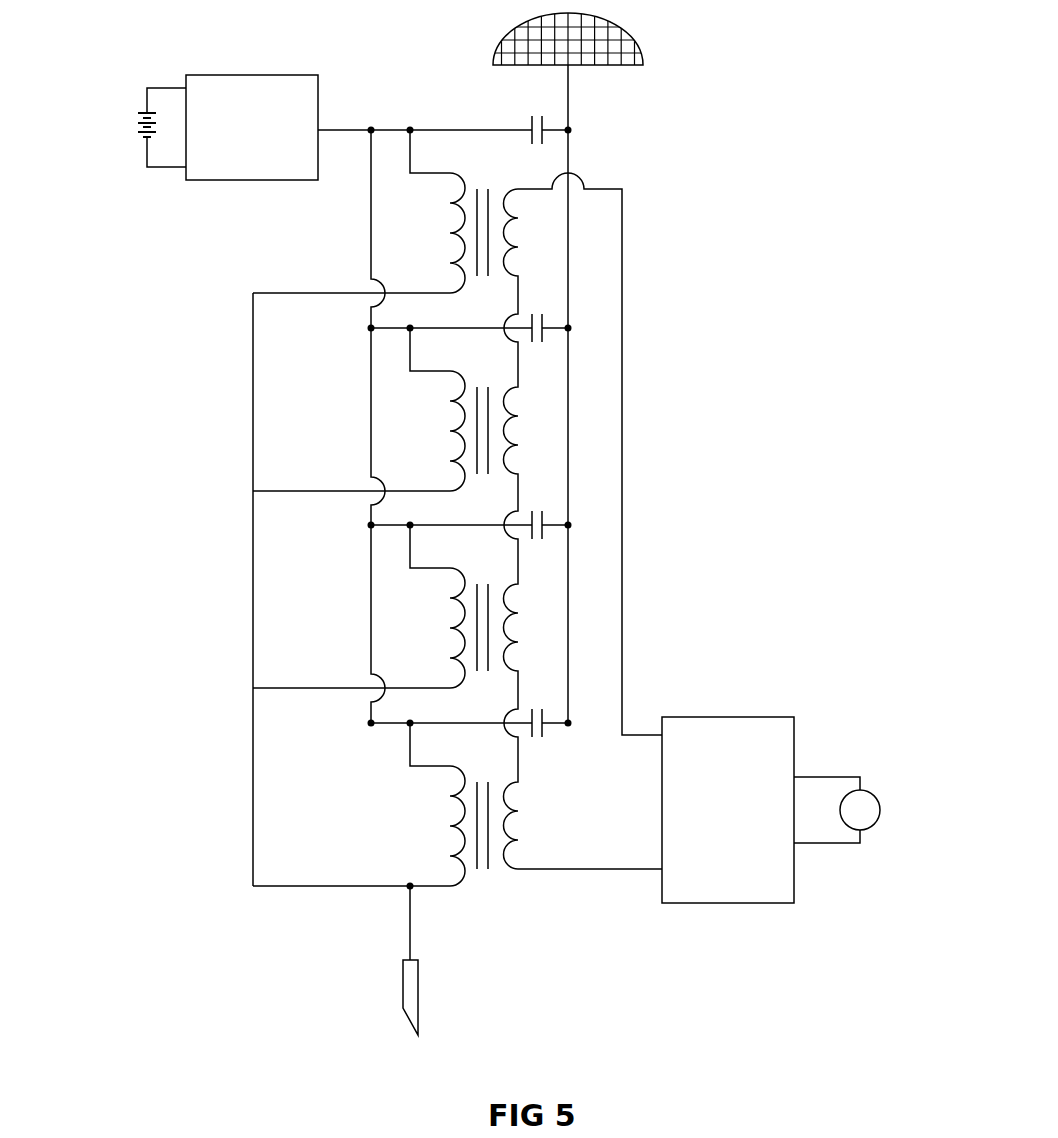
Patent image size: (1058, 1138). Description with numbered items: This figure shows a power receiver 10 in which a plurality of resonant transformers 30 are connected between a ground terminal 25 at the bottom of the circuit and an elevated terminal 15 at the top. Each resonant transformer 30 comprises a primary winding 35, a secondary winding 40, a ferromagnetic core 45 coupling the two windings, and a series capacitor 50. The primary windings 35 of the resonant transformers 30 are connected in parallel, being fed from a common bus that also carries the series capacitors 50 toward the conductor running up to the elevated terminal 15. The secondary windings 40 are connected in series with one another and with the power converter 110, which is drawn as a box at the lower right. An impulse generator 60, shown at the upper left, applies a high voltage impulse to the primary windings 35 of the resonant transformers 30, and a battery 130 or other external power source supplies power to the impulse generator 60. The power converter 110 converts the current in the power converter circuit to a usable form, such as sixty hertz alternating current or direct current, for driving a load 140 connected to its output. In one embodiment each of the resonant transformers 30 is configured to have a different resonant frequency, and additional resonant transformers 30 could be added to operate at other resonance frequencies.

The power receiver 10 is at (734, 45).
The elevated terminal 15 is at (616, 28).
The ground terminal 25 is at (418, 990).
The resonant transformer 30 is at (457, 519).
The primary winding 35 is at (463, 183).
The secondary winding 40 is at (504, 190).
The ferromagnetic core 45 is at (489, 275).
The series capacitor 50 is at (531, 128).
The impulse generator 60 is at (292, 75).
The power converter 110 is at (745, 717).
The battery 130 is at (136, 112).
The load 140 is at (875, 796).